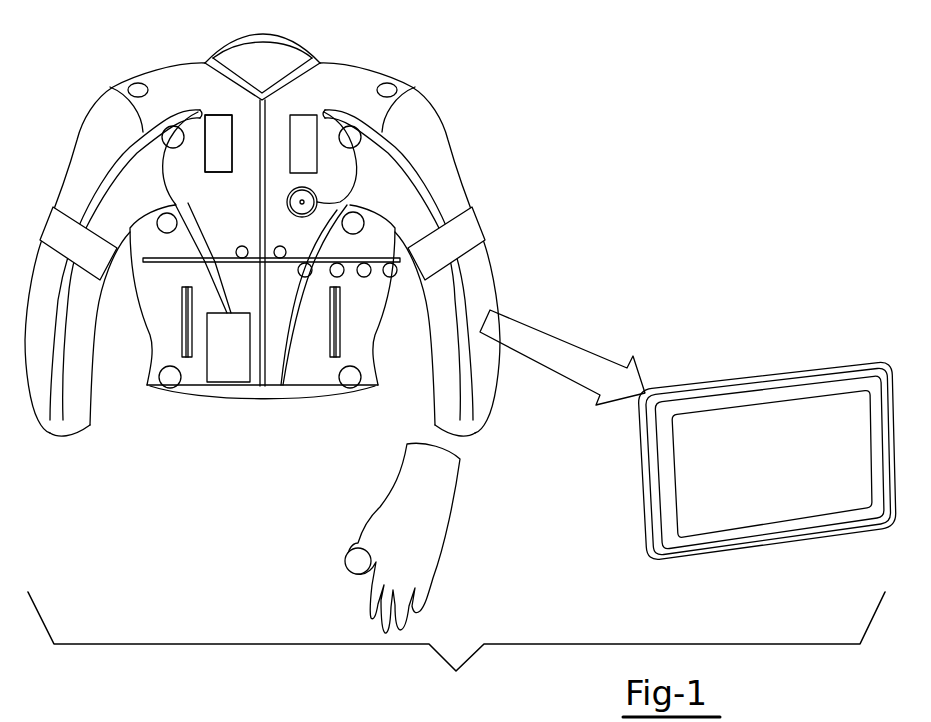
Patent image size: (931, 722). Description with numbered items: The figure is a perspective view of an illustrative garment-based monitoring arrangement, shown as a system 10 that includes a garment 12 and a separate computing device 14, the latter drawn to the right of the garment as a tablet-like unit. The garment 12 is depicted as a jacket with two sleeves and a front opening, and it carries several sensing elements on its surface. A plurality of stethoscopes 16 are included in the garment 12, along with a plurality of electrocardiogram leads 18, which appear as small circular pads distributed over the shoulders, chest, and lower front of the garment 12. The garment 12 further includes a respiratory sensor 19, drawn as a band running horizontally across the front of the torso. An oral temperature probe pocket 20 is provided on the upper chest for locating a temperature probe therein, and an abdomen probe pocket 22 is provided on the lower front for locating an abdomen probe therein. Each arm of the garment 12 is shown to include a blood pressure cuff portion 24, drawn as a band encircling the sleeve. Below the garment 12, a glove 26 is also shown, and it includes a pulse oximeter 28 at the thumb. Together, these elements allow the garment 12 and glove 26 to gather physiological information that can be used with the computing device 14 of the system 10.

The system 10 is at (456, 649).
The garment 12 is at (425, 117).
The computing device 14 is at (748, 360).
The stethoscopes 16 is at (318, 202).
The electrocardiogram leads 18 is at (236, 250).
The respiratory sensor 19 is at (160, 263).
The oral temperature probe pocket 20 is at (212, 125).
The abdomen probe pocket 22 is at (224, 368).
The blood pressure cuff portion 24 is at (60, 228).
The glove 26 is at (430, 533).
The pulse oximeter 28 is at (350, 562).